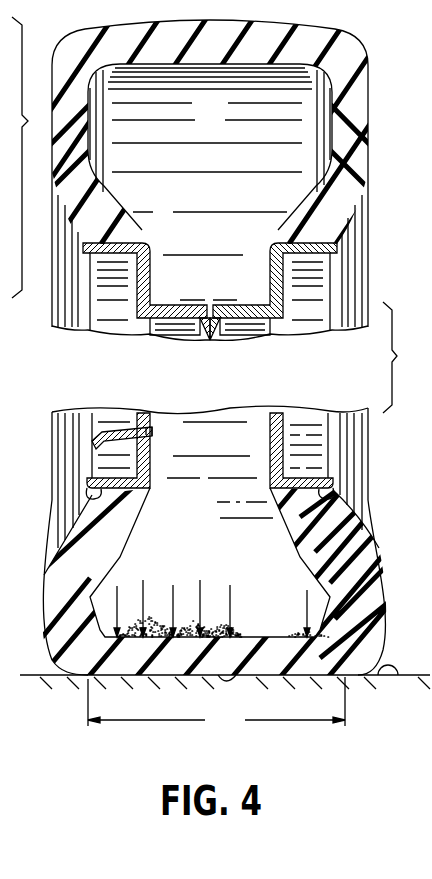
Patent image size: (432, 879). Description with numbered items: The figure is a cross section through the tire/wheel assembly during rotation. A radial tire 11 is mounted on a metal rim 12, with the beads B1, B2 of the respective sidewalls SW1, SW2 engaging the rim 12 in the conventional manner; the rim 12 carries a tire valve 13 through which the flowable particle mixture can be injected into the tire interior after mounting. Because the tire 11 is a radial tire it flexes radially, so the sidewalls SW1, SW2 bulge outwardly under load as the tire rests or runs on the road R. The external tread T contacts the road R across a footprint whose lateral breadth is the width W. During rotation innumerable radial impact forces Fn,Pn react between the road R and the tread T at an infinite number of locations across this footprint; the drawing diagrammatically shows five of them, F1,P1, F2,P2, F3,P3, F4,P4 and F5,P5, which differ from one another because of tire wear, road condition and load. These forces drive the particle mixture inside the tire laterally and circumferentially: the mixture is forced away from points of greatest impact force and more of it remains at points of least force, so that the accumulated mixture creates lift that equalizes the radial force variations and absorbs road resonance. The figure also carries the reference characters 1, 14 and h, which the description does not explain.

The pneumatic tire 1 is at (222, 117).
The tire 11 is at (358, 118).
The metal rim 12 is at (305, 320).
The tire valve 13 is at (153, 437).
The valve 14 is at (144, 416).
The bead B1 is at (110, 493).
The bead B2 is at (307, 490).
The sidewall SW1 is at (56, 565).
The sidewall SW2 is at (372, 550).
The tire tread T is at (248, 673).
The width W is at (216, 704).
The road R is at (393, 672).
The section height h is at (9, 219).
The impact force at location F1,P1 is at (117, 593).
The impact force at location F2,P2 is at (143, 585).
The impact force at location F3,P3 is at (173, 590).
The impact force at location F4,P4 is at (200, 584).
The impact force at location F5,P5 is at (250, 578).
The radial impact forces at locations Fn,Pn is at (307, 594).